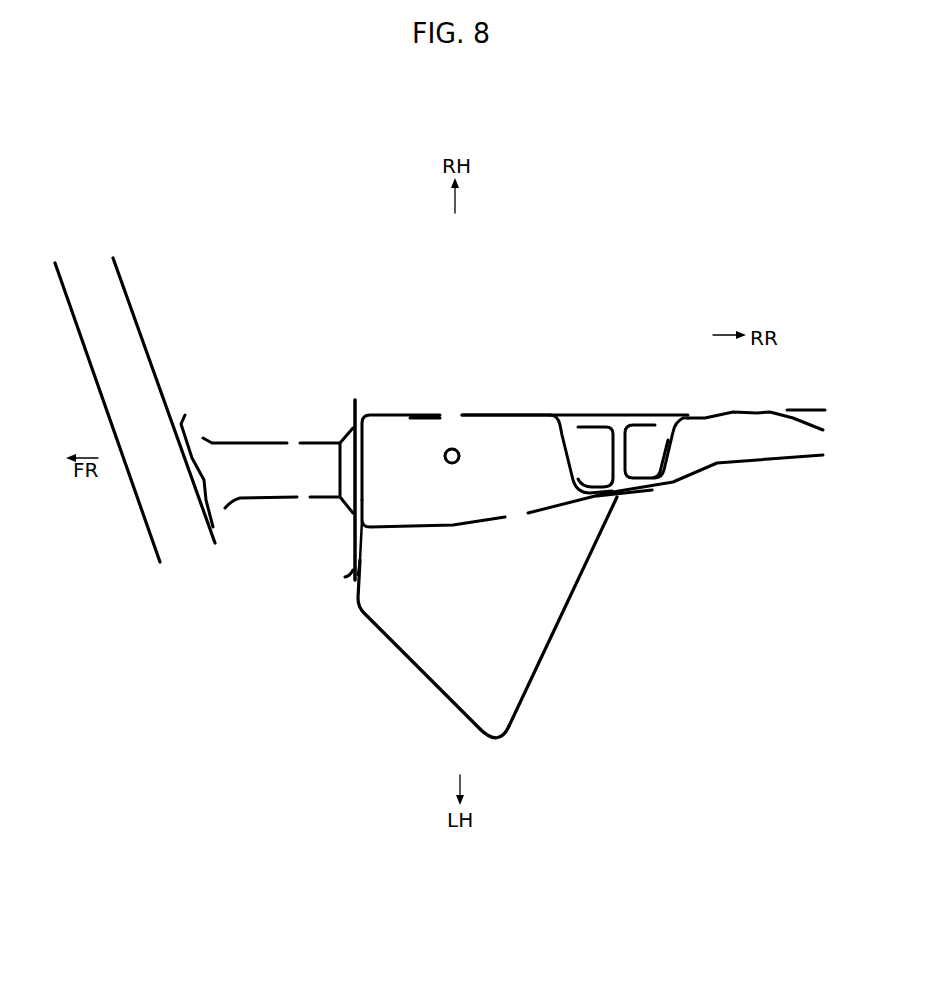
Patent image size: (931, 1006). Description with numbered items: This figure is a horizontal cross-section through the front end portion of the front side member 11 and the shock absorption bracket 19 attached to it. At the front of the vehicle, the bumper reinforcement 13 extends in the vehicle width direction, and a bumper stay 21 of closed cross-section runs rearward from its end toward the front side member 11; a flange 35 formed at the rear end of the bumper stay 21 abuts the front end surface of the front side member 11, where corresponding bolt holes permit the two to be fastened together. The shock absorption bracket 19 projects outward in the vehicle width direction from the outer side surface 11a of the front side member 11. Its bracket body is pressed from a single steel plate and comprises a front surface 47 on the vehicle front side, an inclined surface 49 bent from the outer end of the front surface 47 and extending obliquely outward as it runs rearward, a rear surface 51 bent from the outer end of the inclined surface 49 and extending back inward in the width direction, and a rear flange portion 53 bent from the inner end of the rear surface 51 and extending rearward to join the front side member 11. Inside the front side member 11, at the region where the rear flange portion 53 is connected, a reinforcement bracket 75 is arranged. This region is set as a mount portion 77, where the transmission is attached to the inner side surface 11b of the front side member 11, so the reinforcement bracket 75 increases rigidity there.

The front side member 11 is at (383, 406).
The outer side surface 11a is at (752, 463).
The inner side surface 11b is at (470, 410).
The bumper reinforcement 13 is at (136, 512).
The shock absorption bracket 19 is at (488, 621).
The bumper stay 21 is at (278, 502).
The flange 35 is at (340, 397).
The front surface 47 is at (358, 497).
The inclined surface 49 is at (422, 682).
The rear surface 51 is at (565, 610).
The rear flange portion 53 is at (637, 500).
The reinforcement bracket 75 is at (557, 440).
The mount portion 77 is at (620, 415).